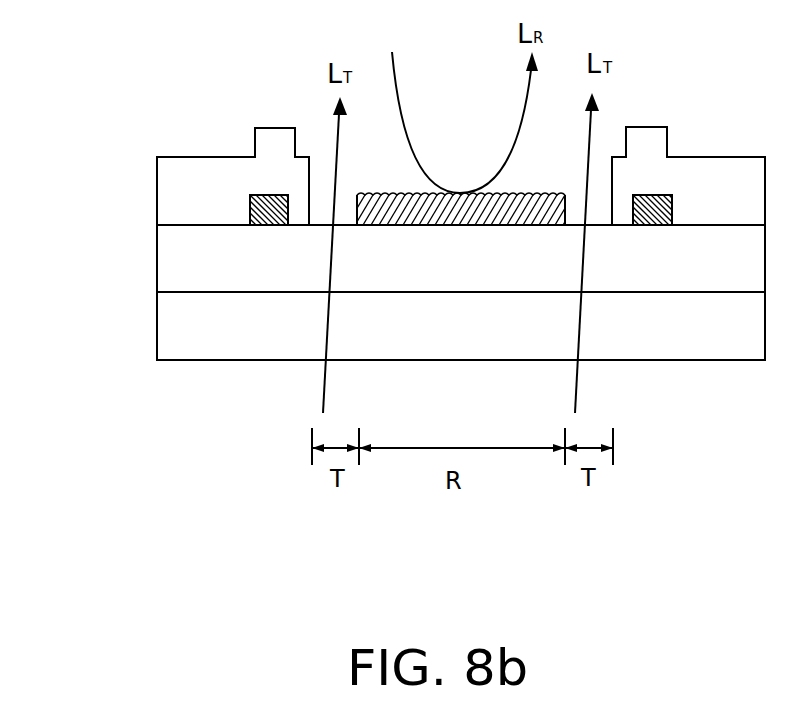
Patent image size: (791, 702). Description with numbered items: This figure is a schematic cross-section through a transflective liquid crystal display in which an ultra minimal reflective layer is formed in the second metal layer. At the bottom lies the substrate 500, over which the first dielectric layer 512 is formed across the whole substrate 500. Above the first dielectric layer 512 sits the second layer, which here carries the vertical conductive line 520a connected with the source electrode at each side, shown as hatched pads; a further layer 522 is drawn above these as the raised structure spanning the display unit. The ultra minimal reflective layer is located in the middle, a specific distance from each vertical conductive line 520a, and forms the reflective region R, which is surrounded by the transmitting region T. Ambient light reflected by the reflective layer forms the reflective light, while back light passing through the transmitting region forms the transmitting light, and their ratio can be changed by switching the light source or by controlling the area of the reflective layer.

The substrate 500 is at (168, 313).
The first dielectric layer 512 is at (172, 243).
The second layer with raised steps 522 is at (172, 190).
The vertical conductive line 520a is at (268, 195).